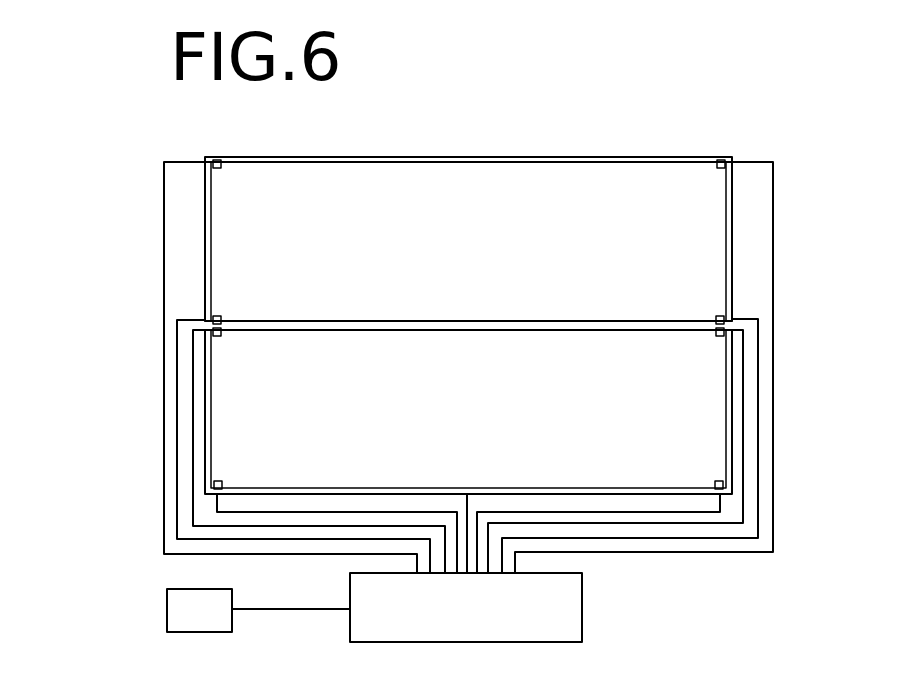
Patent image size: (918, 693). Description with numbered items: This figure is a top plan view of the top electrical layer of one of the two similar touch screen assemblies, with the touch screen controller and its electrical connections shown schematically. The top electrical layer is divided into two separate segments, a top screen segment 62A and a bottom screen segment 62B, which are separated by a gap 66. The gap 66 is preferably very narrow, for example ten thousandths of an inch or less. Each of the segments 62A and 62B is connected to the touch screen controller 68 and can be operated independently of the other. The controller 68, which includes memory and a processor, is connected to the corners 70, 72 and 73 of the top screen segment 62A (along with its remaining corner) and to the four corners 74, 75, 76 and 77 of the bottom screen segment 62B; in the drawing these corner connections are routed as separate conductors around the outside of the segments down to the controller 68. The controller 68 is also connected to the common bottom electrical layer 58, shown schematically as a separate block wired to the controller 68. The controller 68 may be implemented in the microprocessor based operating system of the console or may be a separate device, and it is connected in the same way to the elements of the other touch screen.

The top screen segment 62A is at (588, 180).
The bottom screen segment 62B is at (245, 408).
The gap 66 is at (510, 325).
The corner 70 is at (216, 165).
The corner 72 is at (719, 166).
The corner 73 is at (717, 319).
The corner 74 is at (219, 318).
The corner 75 is at (218, 483).
The corner 76 is at (717, 332).
The corner 77 is at (714, 484).
The bottom electrical layer 58 is at (186, 610).
The touch screen controller 68 is at (568, 615).